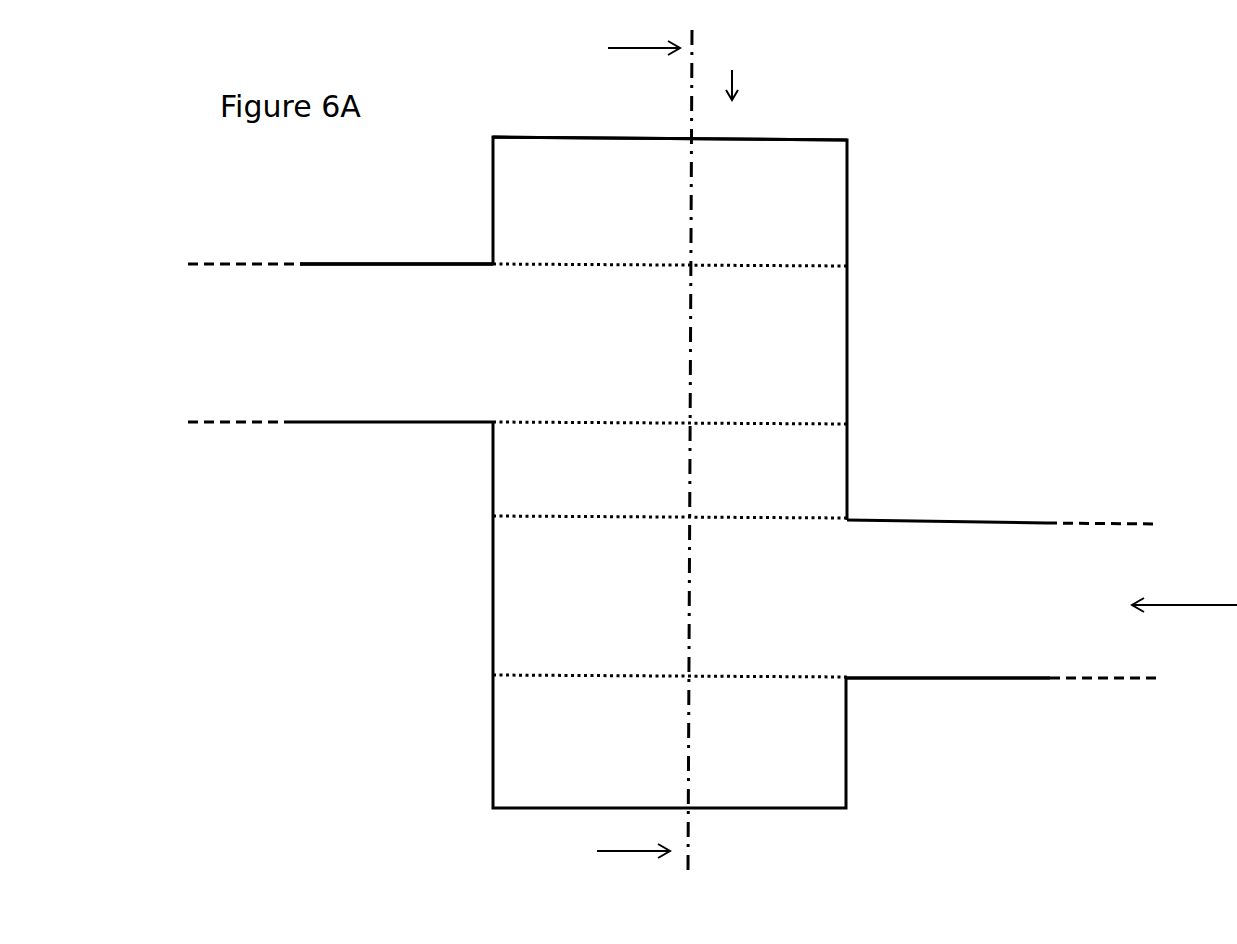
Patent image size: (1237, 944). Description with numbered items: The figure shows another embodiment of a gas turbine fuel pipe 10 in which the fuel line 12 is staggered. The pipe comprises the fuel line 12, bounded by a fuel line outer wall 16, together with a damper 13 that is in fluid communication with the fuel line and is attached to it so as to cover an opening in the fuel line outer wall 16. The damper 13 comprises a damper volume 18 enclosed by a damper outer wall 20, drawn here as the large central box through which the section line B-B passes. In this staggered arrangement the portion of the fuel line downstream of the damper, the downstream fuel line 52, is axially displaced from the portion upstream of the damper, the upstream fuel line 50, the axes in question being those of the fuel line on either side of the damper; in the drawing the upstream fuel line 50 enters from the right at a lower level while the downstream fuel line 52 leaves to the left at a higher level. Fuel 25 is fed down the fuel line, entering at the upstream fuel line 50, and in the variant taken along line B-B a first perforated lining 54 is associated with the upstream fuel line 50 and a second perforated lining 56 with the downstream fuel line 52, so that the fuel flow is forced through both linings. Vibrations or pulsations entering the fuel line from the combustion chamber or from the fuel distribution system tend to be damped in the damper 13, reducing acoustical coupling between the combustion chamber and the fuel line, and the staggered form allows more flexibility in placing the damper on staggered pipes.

The gas turbine fuel pipe 10 is at (712, 450).
The fuel line 12 is at (347, 463).
The damper 13 is at (731, 67).
The fuel line outer wall 16 is at (413, 264).
The damper volume 18 is at (675, 208).
The damper outer wall 20 is at (528, 137).
The fuel 25 is at (1193, 605).
The upstream fuel line 50 is at (925, 665).
The downstream fuel line 52 is at (407, 295).
The first perforated lining 54 is at (527, 675).
The second perforated lining 56 is at (532, 264).